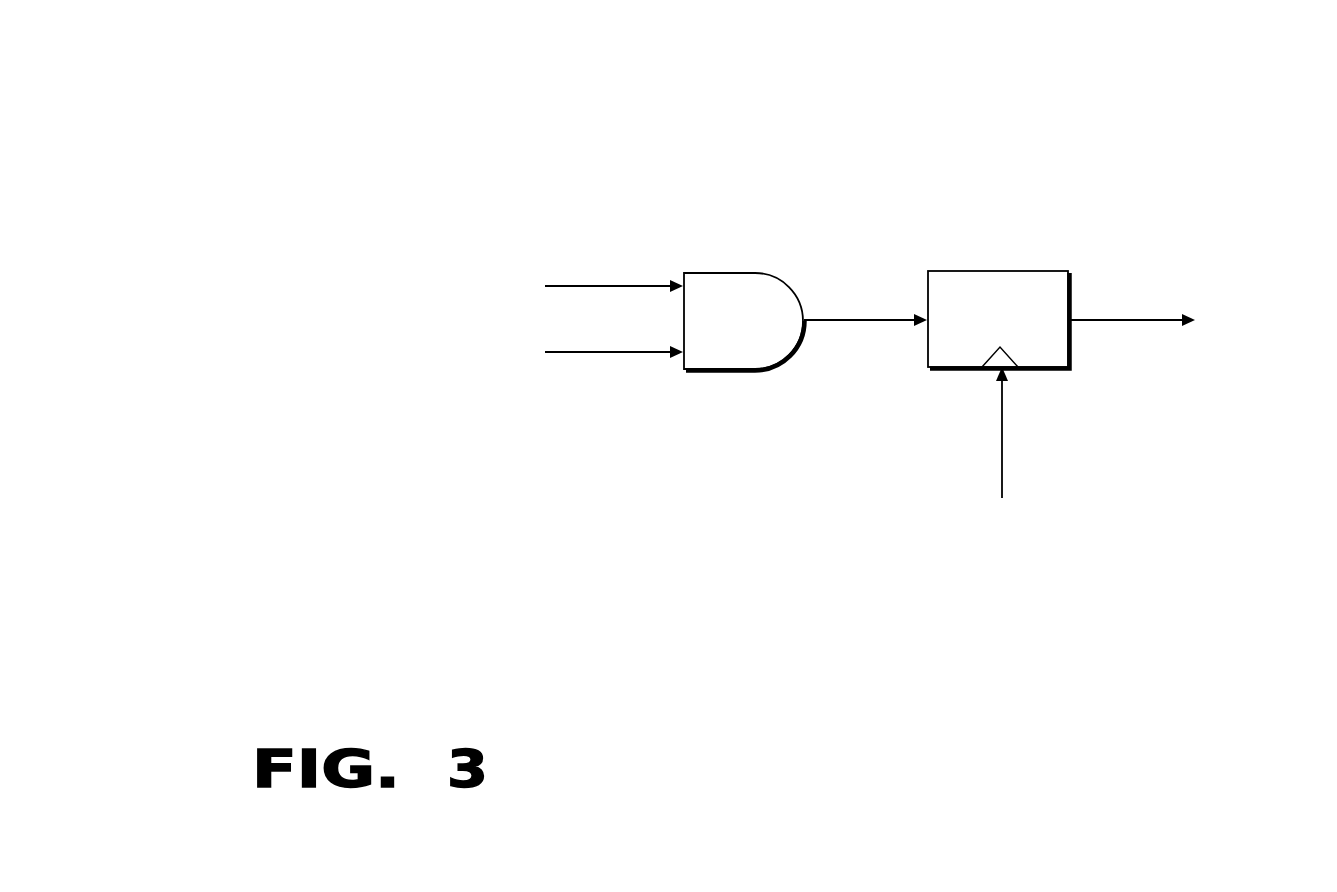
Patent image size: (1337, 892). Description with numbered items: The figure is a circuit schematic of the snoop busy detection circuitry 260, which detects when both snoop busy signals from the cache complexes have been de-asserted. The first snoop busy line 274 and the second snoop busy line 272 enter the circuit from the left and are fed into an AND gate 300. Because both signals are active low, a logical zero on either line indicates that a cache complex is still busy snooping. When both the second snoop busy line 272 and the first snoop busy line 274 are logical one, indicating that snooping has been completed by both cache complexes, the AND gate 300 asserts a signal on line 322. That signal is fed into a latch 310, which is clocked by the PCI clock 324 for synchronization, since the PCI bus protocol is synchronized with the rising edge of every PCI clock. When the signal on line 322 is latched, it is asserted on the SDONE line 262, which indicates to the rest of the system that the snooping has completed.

The detection circuitry 260 is at (1240, 130).
The SBSY(2)# line 272 is at (562, 286).
The SBSY(1)# line 274 is at (562, 352).
The AND gate 300 is at (744, 322).
The line 322 is at (840, 318).
The latch 310 is at (999, 320).
The PCI clock 324 is at (1000, 478).
The SDONE line 262 is at (1160, 320).